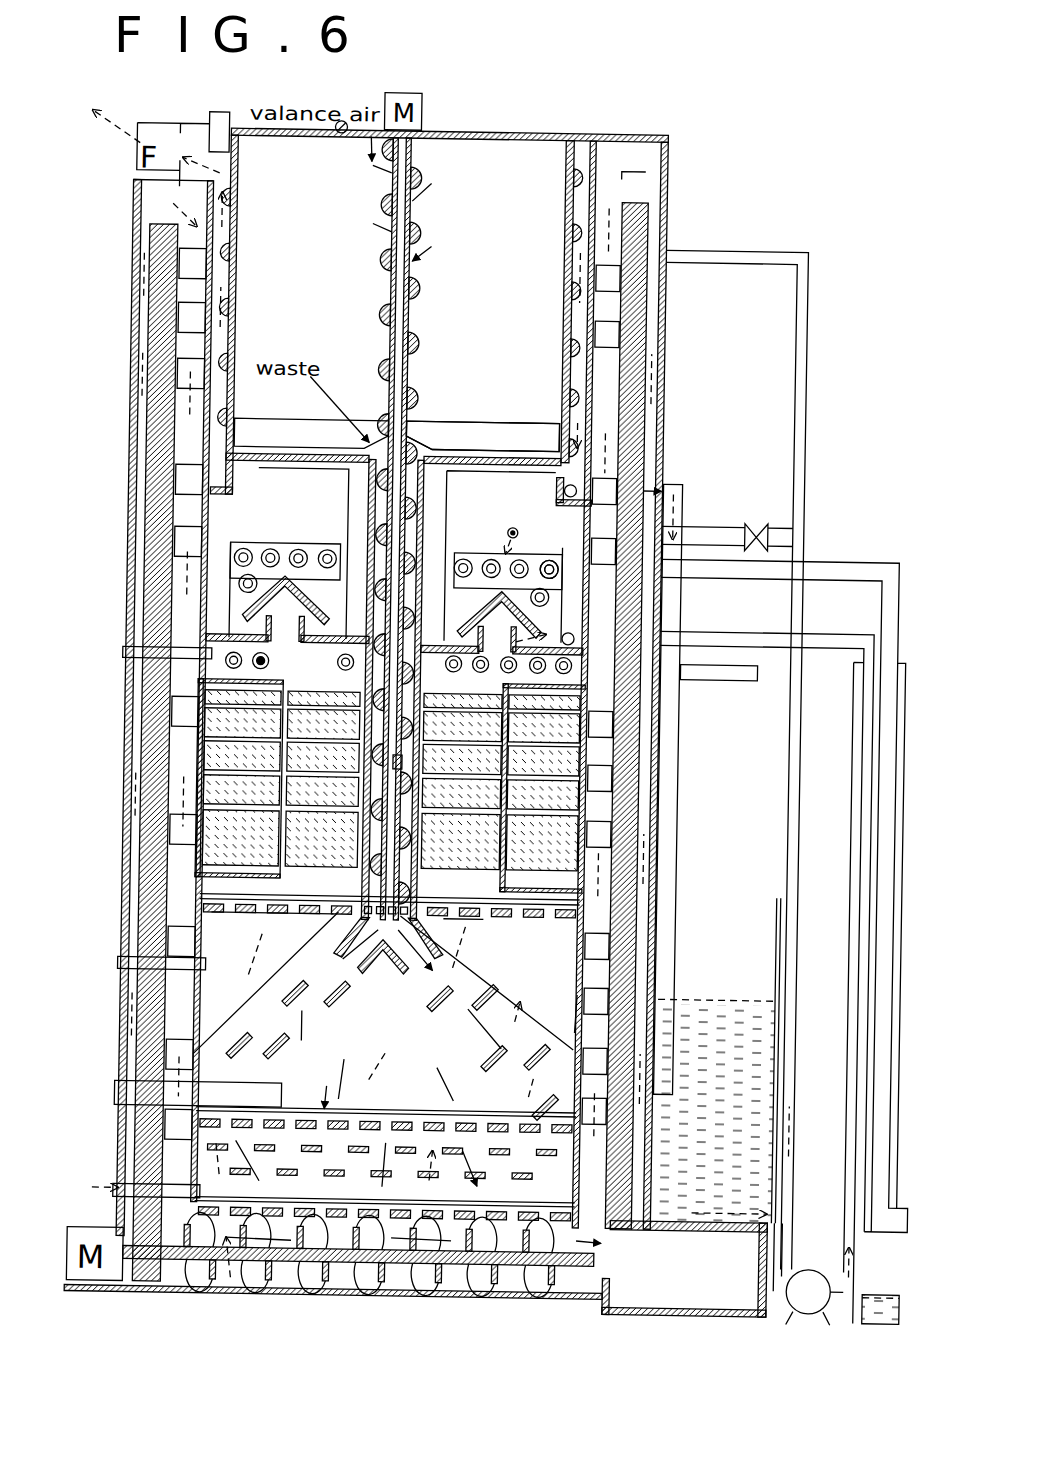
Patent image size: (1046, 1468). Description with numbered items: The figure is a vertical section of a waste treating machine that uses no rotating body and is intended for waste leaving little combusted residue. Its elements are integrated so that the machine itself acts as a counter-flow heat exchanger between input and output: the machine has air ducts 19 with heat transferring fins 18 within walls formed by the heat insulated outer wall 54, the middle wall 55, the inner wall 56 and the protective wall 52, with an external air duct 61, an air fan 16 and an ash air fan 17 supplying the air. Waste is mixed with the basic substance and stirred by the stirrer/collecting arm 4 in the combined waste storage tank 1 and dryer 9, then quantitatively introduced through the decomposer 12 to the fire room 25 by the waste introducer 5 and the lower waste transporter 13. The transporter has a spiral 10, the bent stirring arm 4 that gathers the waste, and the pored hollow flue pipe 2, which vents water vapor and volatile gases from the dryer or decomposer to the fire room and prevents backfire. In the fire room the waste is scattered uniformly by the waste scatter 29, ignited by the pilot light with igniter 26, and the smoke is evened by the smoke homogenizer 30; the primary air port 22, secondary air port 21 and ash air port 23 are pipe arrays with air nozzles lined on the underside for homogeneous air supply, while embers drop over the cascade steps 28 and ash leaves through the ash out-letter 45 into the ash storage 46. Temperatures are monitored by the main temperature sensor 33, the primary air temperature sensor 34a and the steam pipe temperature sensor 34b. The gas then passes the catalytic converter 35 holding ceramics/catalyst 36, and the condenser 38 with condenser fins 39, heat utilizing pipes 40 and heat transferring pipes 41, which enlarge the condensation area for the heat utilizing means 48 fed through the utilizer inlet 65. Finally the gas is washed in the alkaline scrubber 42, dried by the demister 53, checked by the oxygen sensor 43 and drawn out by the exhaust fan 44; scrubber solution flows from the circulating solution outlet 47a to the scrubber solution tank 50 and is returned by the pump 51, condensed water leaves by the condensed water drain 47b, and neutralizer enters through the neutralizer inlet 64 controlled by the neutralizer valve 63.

The waste storage tank 1 is at (485, 304).
The flue pipe 2 is at (402, 220).
The stirrer/collecting arm 4 is at (509, 441).
The waste introducer 5 is at (402, 285).
The dryer 9 is at (353, 528).
The waste transporter 10 is at (380, 255).
The decomposer 12 is at (397, 741).
The waste transporter 13 is at (407, 850).
The air fan 16 is at (134, 219).
The ash air fan 17 is at (652, 181).
The heat transferring fin 18 is at (186, 324).
The air duct 19 is at (186, 359).
The secondary air port 21 is at (238, 908).
The primary air port 22 is at (242, 1123).
The ash air port 23 is at (226, 1213).
The fire room 25 is at (412, 1017).
The pilot light with igniter 26 is at (123, 1100).
The cascade steps/embers dropper 28 is at (382, 1158).
The waste scatter 29 is at (345, 998).
The smoke homogenizer 30 is at (485, 992).
The main temperature sensor 33 is at (129, 1172).
The primary air temperature sensor 34a is at (135, 971).
The steam pipe temperature sensor 34b is at (124, 661).
The catalytic converter 35 is at (428, 745).
The ceramics/catalyst 36 is at (281, 779).
The condenser 38 is at (289, 553).
The condenser fin 39 is at (352, 526).
The heat utilizing pipe 40 is at (241, 565).
The heat transferring pipe 41 is at (246, 607).
The alkaline scrubber 42 is at (216, 311).
The O2 43 is at (213, 112).
The exhaust fan 44 is at (92, 134).
The ash out-letter 45 is at (600, 1256).
The ash storage 46 is at (710, 1290).
The circulating solution outlet 47a is at (668, 480).
The condensed water drain 47b is at (723, 600).
The heat utilizing means (utilizer) 48 is at (873, 705).
The scrubber solution tank 50 is at (695, 1064).
The pump 51 is at (838, 1266).
The protective wall 52 is at (132, 394).
The demister 53 is at (217, 201).
The outer wall (heat insulated) 54 is at (155, 429).
The middle wall 55 is at (228, 778).
The inner wall 56 is at (386, 689).
The external air duct 61 is at (650, 356).
The neutralizer valve 63 is at (728, 516).
The neutralizer inlet 64 is at (510, 526).
The utilizer inlet 65 is at (545, 565).